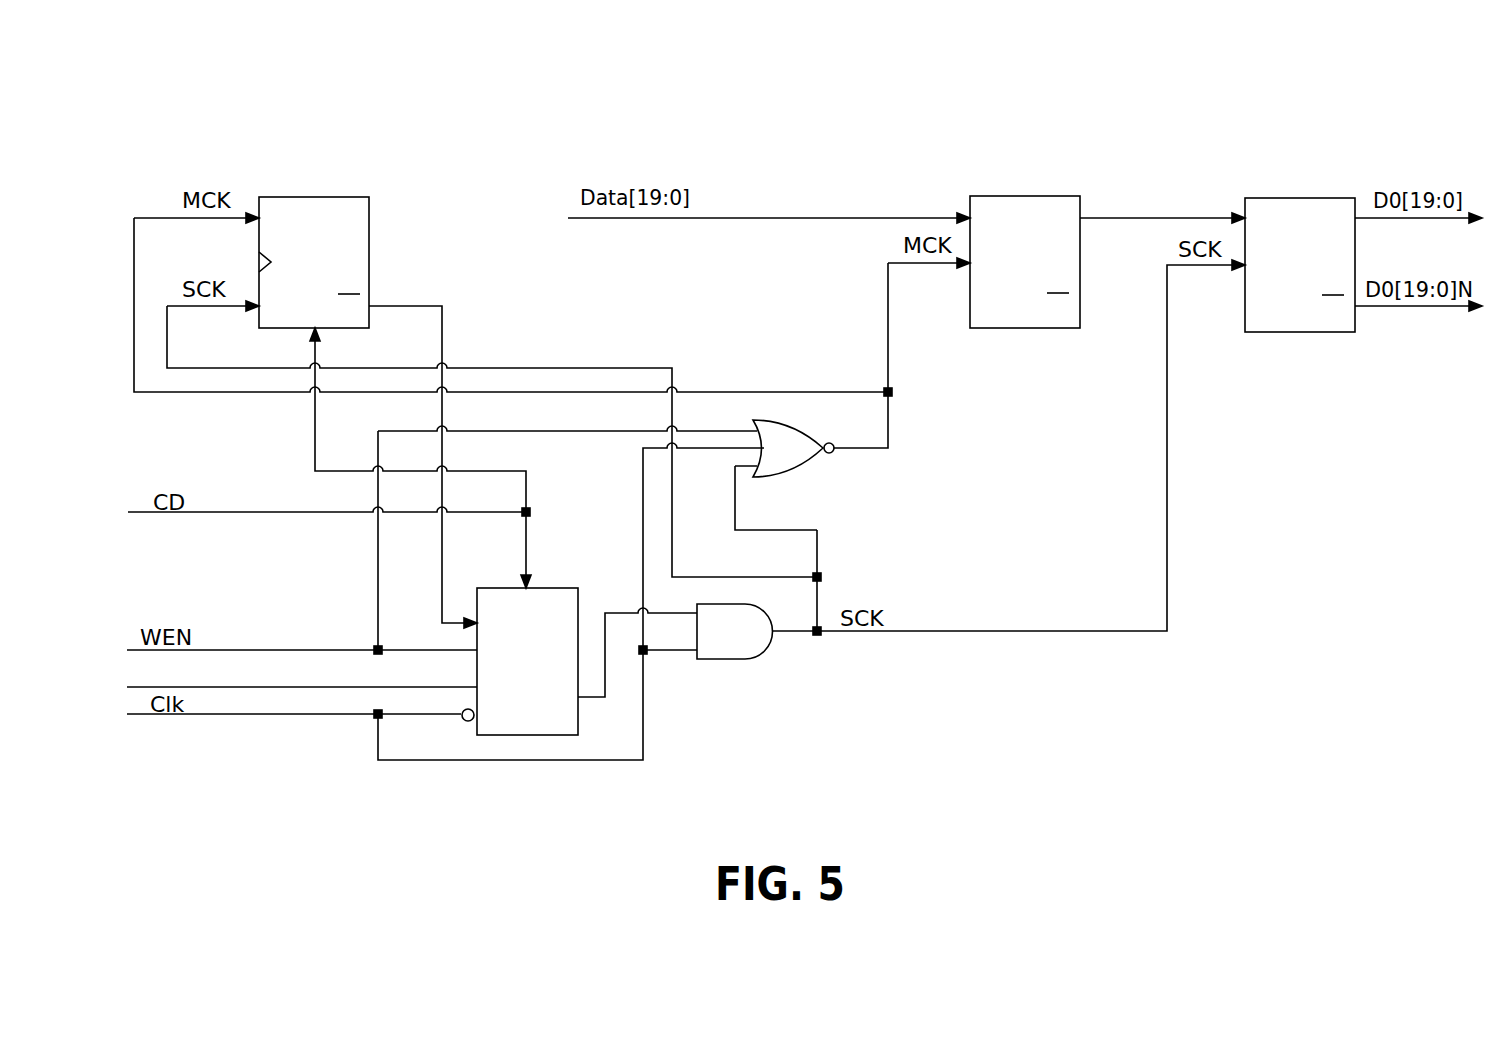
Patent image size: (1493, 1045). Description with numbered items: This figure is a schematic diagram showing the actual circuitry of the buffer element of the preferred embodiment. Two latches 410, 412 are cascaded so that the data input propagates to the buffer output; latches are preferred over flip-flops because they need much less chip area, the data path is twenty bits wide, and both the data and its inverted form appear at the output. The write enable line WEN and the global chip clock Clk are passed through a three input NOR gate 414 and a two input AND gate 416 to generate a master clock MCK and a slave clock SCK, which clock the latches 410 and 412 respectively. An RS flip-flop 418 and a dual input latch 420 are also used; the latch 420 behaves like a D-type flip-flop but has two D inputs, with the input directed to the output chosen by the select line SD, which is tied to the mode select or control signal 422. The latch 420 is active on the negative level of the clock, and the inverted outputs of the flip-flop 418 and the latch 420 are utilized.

The latch 410 is at (1045, 196).
The latch 412 is at (1267, 198).
The three input NOR gate 414 is at (807, 465).
The two input AND gate 416 is at (757, 655).
The RS flip-flop 418 is at (337, 197).
The dual input latch 420 is at (522, 735).
The mode select or control signal 422 is at (245, 687).